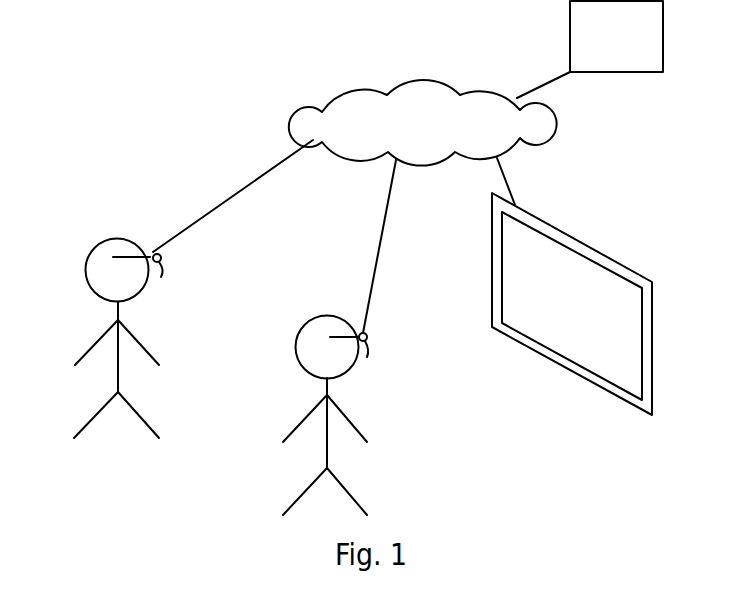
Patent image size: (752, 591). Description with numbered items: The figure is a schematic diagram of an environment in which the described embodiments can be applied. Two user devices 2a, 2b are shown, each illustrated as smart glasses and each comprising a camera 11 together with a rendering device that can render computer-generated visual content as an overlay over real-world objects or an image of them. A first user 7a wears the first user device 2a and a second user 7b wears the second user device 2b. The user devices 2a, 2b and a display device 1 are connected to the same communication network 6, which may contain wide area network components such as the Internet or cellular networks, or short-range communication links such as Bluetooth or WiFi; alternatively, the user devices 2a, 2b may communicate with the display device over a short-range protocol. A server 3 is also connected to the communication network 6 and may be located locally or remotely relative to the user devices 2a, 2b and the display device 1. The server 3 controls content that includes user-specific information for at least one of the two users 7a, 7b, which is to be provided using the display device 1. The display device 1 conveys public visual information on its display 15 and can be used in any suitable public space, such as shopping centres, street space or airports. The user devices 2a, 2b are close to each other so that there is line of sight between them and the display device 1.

The display device 1 is at (603, 252).
The display 15 is at (642, 352).
The server 3 is at (624, 33).
The communication network 6 is at (414, 133).
The first user device 2a is at (123, 257).
The second user device 2b is at (338, 333).
The first user 7a is at (118, 377).
The second user 7b is at (327, 453).
The camera 11 is at (155, 250).